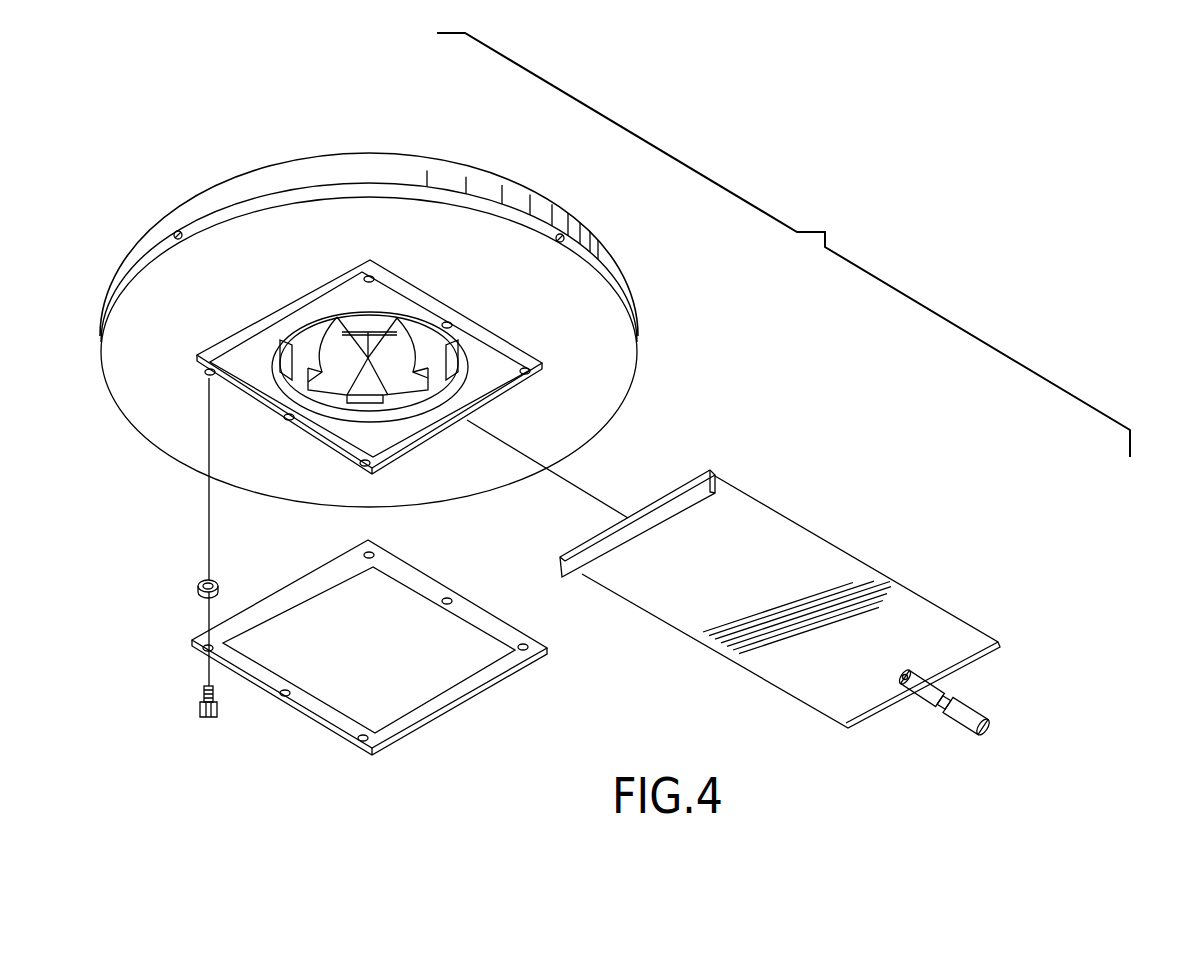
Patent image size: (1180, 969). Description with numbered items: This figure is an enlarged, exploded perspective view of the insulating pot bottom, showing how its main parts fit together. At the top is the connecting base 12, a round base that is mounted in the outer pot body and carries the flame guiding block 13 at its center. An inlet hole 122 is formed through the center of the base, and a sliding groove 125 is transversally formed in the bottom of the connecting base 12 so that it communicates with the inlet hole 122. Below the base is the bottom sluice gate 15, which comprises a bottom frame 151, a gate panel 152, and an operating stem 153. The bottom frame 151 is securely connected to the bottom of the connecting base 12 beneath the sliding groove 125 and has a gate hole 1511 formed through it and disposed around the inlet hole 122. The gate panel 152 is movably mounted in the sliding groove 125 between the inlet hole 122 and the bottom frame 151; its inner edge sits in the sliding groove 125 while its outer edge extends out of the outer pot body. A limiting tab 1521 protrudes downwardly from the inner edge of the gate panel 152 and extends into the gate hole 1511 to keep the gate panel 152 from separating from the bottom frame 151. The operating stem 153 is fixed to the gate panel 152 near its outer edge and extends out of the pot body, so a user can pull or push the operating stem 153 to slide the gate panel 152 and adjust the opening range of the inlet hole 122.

The connecting base 12 is at (157, 484).
The sliding groove 125 is at (262, 340).
The inlet hole 122 is at (378, 413).
The flame guiding block 13 is at (327, 401).
The bottom sluice gate 15 is at (1071, 591).
The bottom frame 151 is at (371, 658).
The gate hole 1511 is at (352, 685).
The gate panel 152 is at (757, 622).
The limiting tab 1521 is at (590, 543).
The operating stem 153 is at (982, 728).